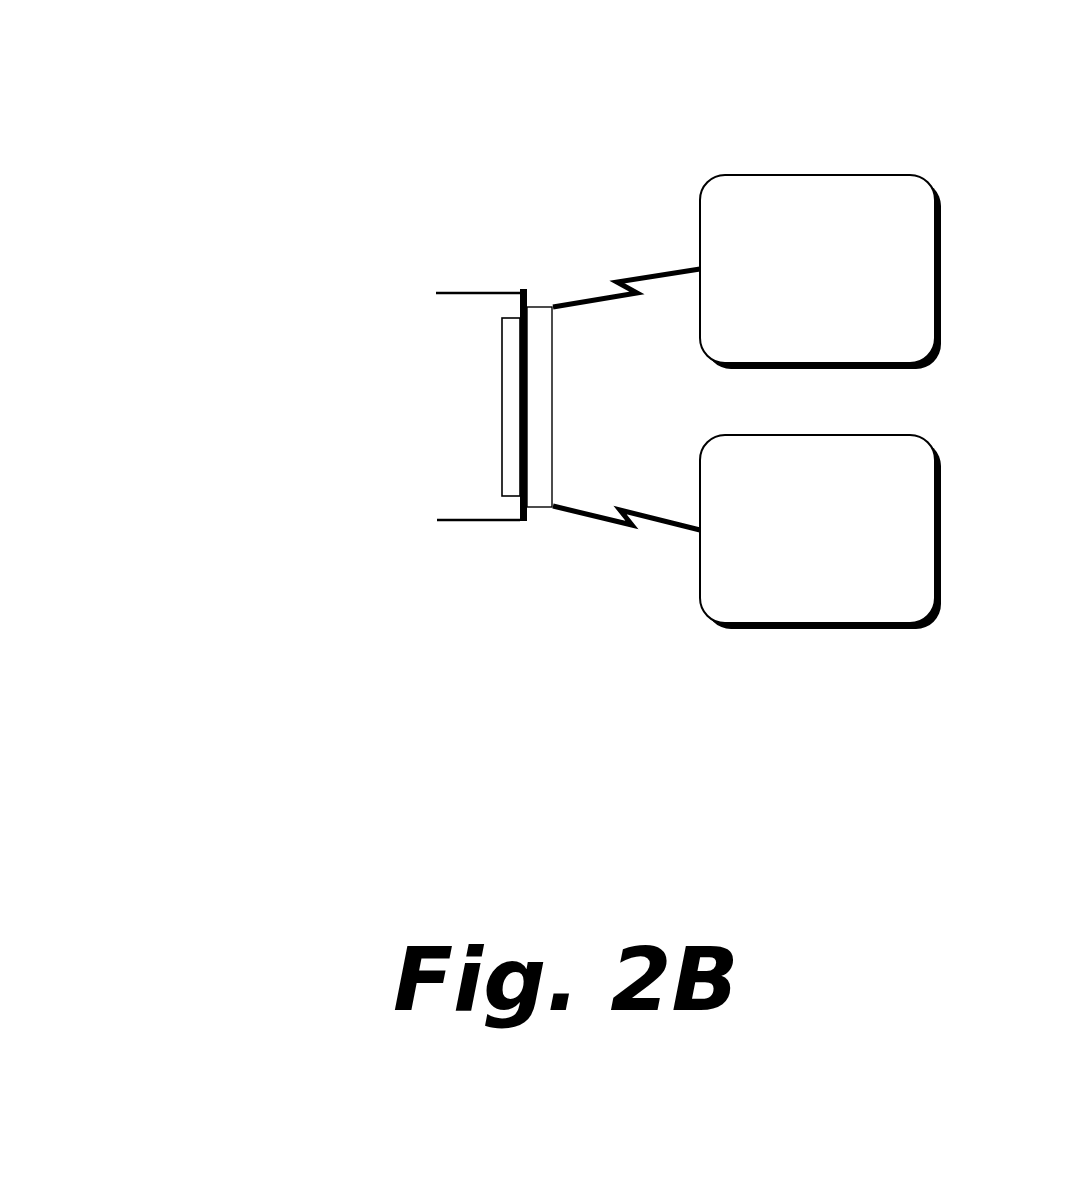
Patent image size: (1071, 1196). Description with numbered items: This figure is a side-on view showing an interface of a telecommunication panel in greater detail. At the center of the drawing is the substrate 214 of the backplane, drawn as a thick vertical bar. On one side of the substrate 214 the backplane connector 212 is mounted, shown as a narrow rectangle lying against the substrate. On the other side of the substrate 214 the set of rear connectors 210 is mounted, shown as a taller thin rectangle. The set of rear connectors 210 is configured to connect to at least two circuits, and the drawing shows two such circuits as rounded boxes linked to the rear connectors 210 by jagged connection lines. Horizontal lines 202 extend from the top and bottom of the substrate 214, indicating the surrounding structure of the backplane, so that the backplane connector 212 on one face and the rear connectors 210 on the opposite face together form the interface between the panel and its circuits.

The substrate 202 is at (437, 521).
The substrate 214 is at (524, 522).
The backplane connector 212 is at (495, 350).
The set of rear connectors 210 is at (553, 466).